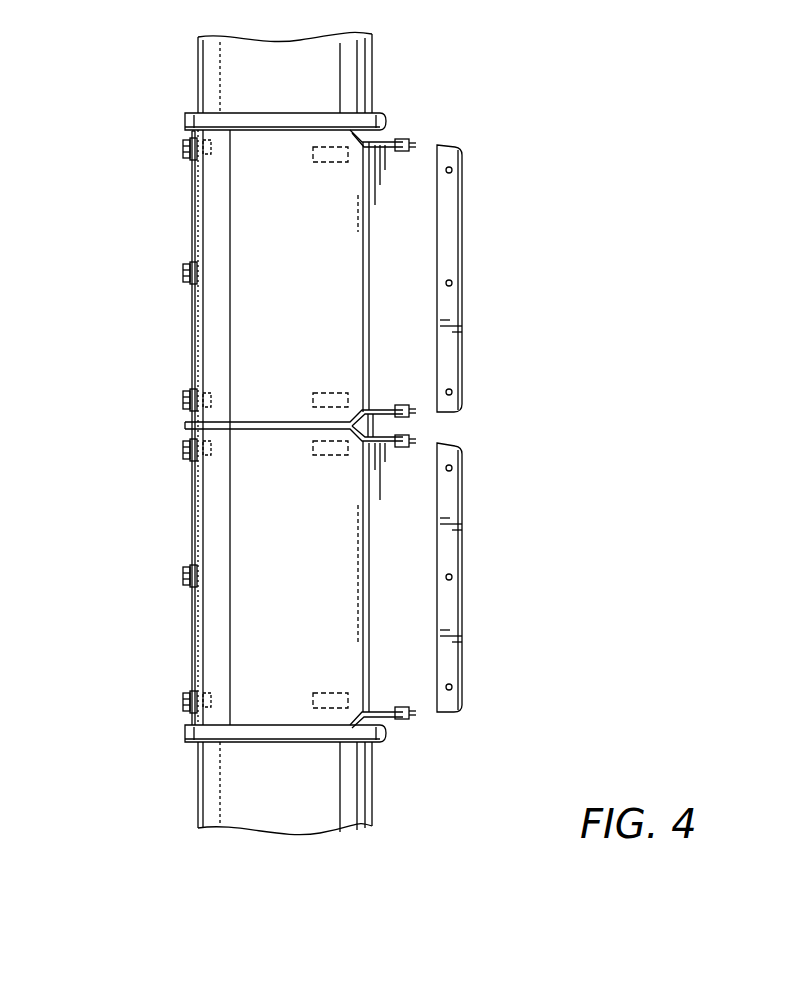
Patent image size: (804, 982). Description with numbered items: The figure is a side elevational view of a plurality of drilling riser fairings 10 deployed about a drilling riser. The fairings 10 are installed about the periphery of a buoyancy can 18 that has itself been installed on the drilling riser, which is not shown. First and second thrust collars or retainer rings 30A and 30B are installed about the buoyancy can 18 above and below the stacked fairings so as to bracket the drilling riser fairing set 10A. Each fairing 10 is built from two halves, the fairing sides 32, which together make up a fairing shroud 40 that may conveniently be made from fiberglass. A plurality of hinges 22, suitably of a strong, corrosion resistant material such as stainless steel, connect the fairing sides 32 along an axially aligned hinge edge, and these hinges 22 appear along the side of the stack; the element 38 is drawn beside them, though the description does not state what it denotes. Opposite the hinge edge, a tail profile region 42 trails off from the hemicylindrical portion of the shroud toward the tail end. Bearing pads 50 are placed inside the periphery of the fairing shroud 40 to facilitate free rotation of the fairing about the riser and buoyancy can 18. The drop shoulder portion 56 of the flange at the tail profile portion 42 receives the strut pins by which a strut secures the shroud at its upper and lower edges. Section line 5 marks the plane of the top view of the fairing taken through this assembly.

The drilling riser fairing 10 is at (288, 272).
The drilling riser fairing set 10A is at (127, 388).
The buoyancy can 18 is at (222, 790).
The hinge 22 is at (184, 453).
The first thrust collar or retainer ring 30A is at (387, 742).
The second thrust collar or retainer ring 30B is at (387, 125).
The fairing side 32 is at (302, 536).
The retaining strip 38 is at (215, 335).
The fairing shroud 40 is at (215, 182).
The tail profile region 42 is at (417, 253).
The bearing pad 50 is at (332, 160).
The drop shoulder portion 56 is at (386, 141).
The section line 5- 5 is at (110, 425).